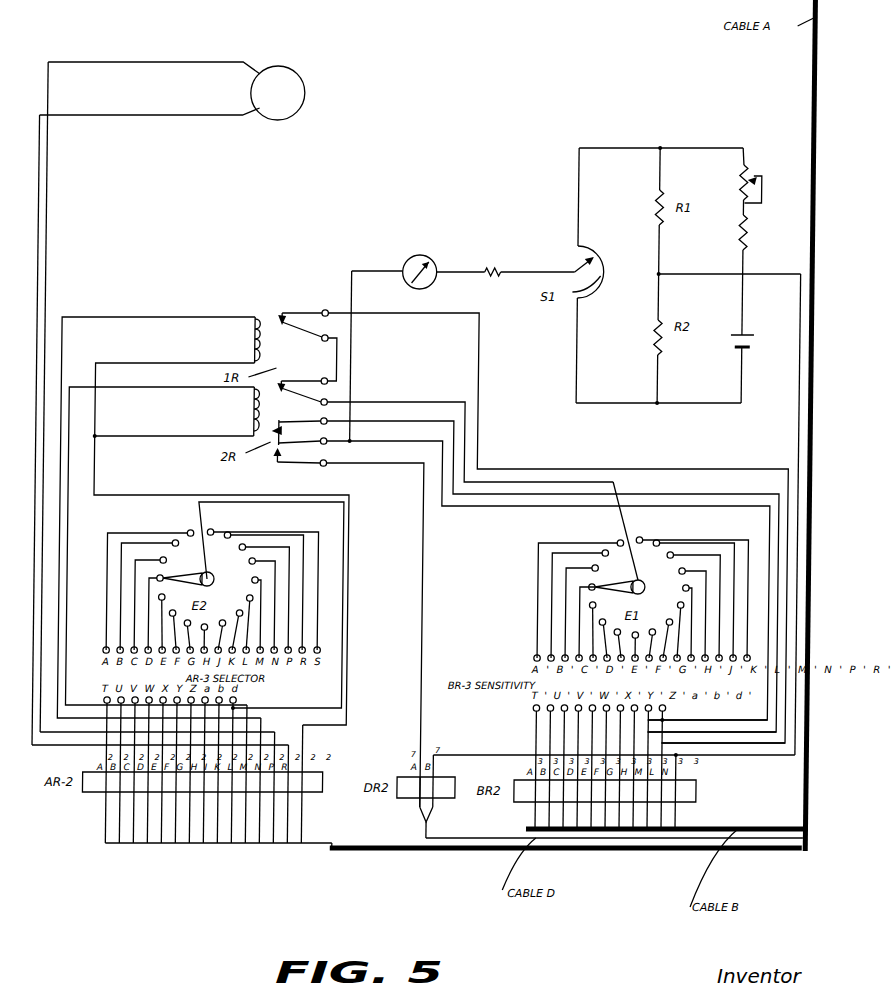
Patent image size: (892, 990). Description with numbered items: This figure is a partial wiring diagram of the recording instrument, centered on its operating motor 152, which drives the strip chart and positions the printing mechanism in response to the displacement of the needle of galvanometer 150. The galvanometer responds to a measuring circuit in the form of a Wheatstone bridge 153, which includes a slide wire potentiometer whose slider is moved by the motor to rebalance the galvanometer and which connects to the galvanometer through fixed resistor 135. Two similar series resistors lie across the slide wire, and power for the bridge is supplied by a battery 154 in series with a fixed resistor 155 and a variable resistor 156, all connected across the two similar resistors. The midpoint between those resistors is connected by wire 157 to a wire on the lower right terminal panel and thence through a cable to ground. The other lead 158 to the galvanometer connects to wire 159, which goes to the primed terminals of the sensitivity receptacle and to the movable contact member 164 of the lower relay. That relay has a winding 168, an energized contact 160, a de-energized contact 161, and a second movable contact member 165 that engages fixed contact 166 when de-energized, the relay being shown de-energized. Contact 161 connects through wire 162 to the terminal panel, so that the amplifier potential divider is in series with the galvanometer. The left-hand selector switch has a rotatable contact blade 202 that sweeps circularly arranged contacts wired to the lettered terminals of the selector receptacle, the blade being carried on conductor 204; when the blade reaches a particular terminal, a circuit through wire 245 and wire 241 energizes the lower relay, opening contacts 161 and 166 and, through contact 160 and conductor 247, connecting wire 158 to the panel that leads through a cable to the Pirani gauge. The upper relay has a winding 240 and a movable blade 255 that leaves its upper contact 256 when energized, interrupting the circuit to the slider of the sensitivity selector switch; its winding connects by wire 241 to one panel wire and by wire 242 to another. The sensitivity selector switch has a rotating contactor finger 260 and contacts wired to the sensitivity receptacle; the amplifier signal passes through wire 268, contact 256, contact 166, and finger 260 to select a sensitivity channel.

The electric motor 152 is at (272, 120).
The Wheatstone bridge 153 is at (572, 202).
The battery 154 is at (752, 334).
The fixed resistor 155 is at (750, 241).
The variable resistor 156 is at (765, 182).
The fixed resistor 135 is at (491, 266).
The galvanometer 150 is at (423, 256).
The lead wire 158 is at (350, 293).
The energized contact 160 is at (300, 467).
The de-energized contact 161 is at (288, 426).
The movable contact member 164 is at (302, 447).
The second movable contact member 165 is at (286, 395).
The fixed contact 166 is at (304, 372).
The winding 168 is at (251, 415).
The winding 240 is at (252, 345).
The wire 242 is at (148, 317).
The wire 245 is at (68, 671).
The wire 241 is at (349, 550).
The conductor 204 is at (344, 597).
The rotatable contact blade 202 is at (190, 577).
The rotating contactor finger 260 is at (616, 583).
The movable blade 255 is at (308, 358).
The upper contact 256 is at (299, 312).
The conductor 247 is at (424, 610).
The wire 157 is at (778, 748).
The wire 268 is at (735, 745).
The wire 162 is at (713, 733).
The wire 159 is at (717, 718).